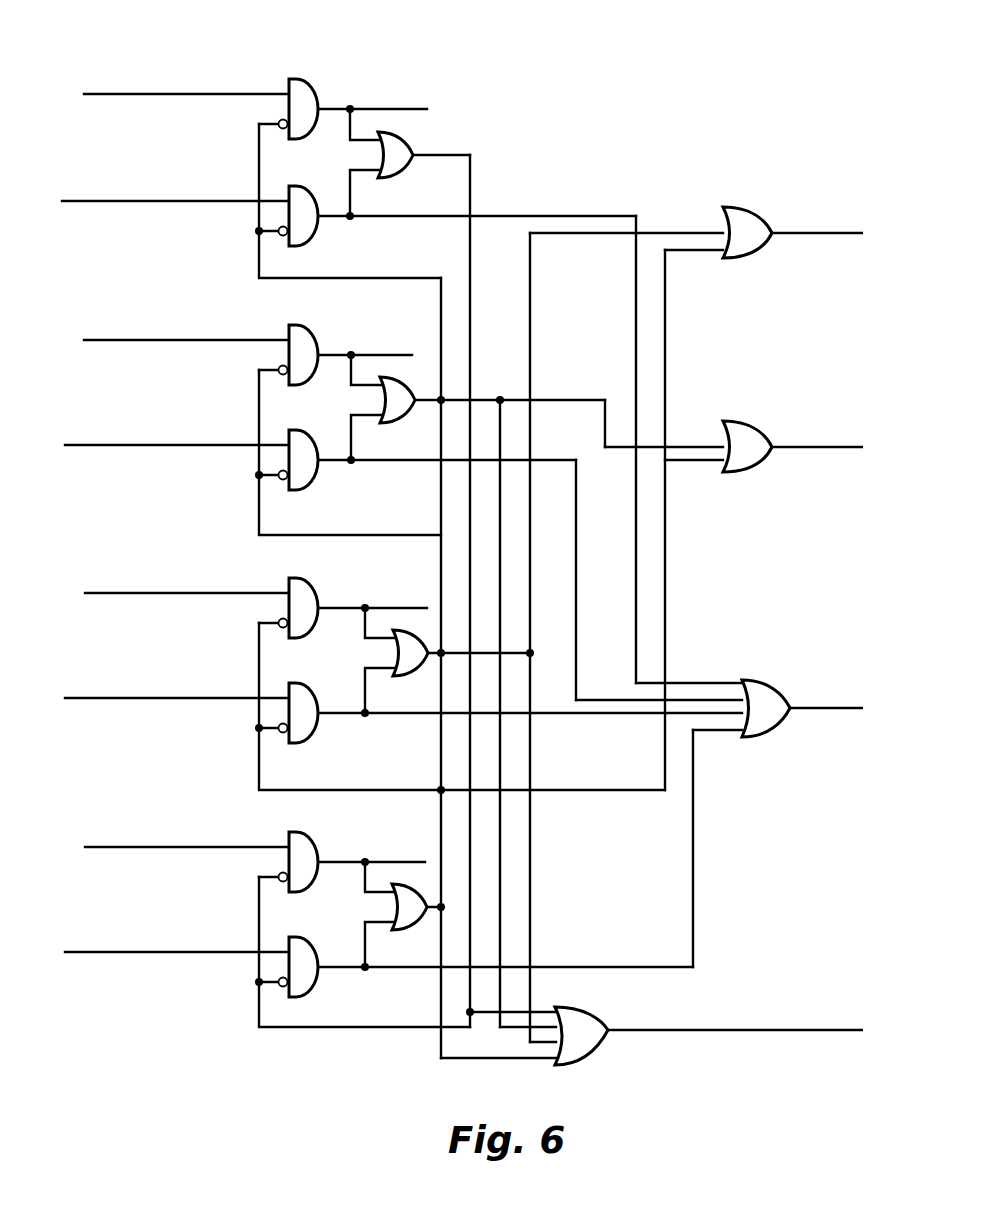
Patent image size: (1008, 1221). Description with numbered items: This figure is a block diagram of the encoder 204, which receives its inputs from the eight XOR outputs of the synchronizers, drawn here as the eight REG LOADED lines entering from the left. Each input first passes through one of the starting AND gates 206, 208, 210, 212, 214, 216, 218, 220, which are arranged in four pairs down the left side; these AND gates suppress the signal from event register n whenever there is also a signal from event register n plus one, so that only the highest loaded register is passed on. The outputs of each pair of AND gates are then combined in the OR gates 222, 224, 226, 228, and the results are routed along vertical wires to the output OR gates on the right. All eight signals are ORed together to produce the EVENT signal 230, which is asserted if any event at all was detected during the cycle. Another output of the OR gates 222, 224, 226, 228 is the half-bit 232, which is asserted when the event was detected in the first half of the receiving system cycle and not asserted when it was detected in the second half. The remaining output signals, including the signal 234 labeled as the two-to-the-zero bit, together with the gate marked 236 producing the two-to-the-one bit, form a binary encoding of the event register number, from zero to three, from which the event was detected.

The encoder 204 is at (446, 541).
The AND gate 206 is at (313, 83).
The AND gate 208 is at (308, 243).
The AND gate 210 is at (315, 328).
The AND gate 212 is at (308, 487).
The AND gate 214 is at (315, 587).
The AND gate 216 is at (305, 740).
The AND gate 218 is at (315, 837).
The AND gate 220 is at (305, 992).
The OR gate 222 is at (404, 139).
The OR gate 224 is at (400, 413).
The OR gate 226 is at (405, 673).
The OR gate 228 is at (410, 925).
The EVENT signal 230 is at (758, 1028).
The half-bit 232 is at (800, 705).
The binary encoding signal 234 is at (790, 444).
The OR gate producing 2^1 BIT output 236 is at (790, 232).